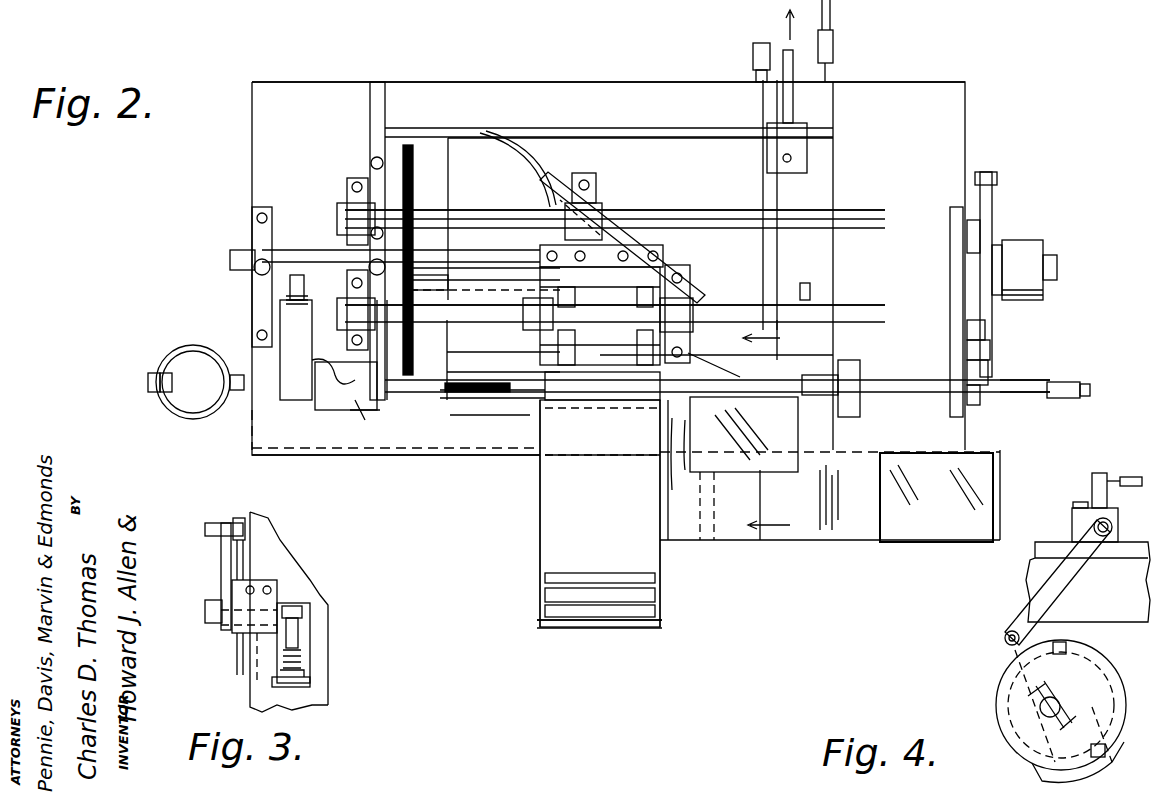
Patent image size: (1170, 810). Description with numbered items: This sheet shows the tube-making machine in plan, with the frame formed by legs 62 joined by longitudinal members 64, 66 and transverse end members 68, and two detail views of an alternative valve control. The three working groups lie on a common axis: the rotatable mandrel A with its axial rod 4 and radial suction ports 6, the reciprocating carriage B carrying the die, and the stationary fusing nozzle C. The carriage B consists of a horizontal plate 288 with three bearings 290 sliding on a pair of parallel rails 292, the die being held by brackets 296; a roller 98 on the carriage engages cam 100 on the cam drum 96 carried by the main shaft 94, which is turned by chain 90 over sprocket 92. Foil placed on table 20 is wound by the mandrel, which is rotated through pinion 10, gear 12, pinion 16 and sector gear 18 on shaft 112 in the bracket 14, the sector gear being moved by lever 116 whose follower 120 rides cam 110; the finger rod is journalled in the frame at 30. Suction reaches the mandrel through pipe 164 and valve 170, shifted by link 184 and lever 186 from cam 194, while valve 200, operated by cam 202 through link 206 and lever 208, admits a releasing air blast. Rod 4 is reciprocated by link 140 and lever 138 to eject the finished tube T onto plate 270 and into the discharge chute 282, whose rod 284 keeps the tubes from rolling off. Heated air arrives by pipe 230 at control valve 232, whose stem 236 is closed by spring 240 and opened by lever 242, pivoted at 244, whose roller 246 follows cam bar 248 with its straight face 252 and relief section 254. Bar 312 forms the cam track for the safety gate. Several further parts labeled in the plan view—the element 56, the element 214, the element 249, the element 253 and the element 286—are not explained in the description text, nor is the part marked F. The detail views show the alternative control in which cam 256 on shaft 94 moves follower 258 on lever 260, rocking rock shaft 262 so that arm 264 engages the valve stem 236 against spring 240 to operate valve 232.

In FIG. 2, the axial rod 4 is at (1035, 395).
In FIG. 2, the radial ports 6 is at (772, 430).
In FIG. 2, the pinion 10 is at (970, 405).
In FIG. 2, the gear 12 is at (988, 370).
In FIG. 2, the plate or bracket 14 is at (950, 345).
In FIG. 2, the pinion 16 is at (990, 350).
In FIG. 2, the sector gear 18 is at (985, 330).
In FIG. 2, the table 20 is at (798, 430).
In FIG. 2, the journal 30 is at (820, 460).
In FIG. 2, the hopper plate 56 is at (595, 400).
In FIG. 2, the legs 62 is at (252, 446).
In FIG. 2, the longitudinal member 64 is at (440, 455).
In FIG. 2, the longitudinal member 66 is at (490, 80).
In FIG. 2, the transverse end members 68 is at (252, 150).
In FIG. 2, the chain 90 is at (420, 150).
In FIG. 2, the second sprocket 92 is at (412, 190).
In FIG. 2, the main shaft 94 is at (1057, 266).
In FIG. 3, the main shaft 94 is at (205, 605).
In FIG. 4, the main shaft 94 is at (1040, 708).
In FIG. 2, the cam drum 96 is at (640, 112).
In FIG. 2, the roller 98 is at (688, 252).
In FIG. 2, the cam 100 is at (512, 143).
In FIG. 2, the cam 110 is at (1045, 292).
In FIG. 2, the shaft 112 is at (990, 232).
In FIG. 2, the lever 116 is at (995, 195).
In FIG. 2, the roller or follower 120 is at (1015, 245).
In FIG. 2, the lever 138 is at (1090, 384).
In FIG. 2, the link 140 is at (1060, 382).
In FIG. 2, the suction pipe 164 is at (783, 12).
In FIG. 2, the valve 170 is at (730, 155).
In FIG. 2, the link 184 is at (756, 76).
In FIG. 2, the lever 186 is at (762, 43).
In FIG. 2, the cam 194 is at (777, 197).
In FIG. 2, the valve 200 is at (835, 8).
In FIG. 2, the short cam 202 is at (818, 283).
In FIG. 2, the link 206 is at (828, 75).
In FIG. 2, the lever 208 is at (830, 45).
In FIG. 2, the bar 214 is at (510, 400).
In FIG. 2, the pipe 230 is at (160, 378).
In FIG. 2, the control valve 232 is at (295, 410).
In FIG. 3, the control valve 232 is at (300, 685).
In FIG. 2, the valve stem 236 is at (290, 285).
In FIG. 3, the valve stem 236 is at (298, 636).
In FIG. 4, the valve stem 236 is at (1130, 477).
In FIG. 2, the spring 240 is at (286, 300).
In FIG. 3, the spring 240 is at (301, 658).
In FIG. 2, the lever 242 is at (258, 247).
In FIG. 2, the pivot 244 is at (230, 265).
In FIG. 2, the cam roller 246 is at (300, 252).
In FIG. 2, the cam bar 248 is at (455, 240).
In FIG. 2, the hopper top bar 249 is at (602, 384).
In FIG. 2, the straight face 252 is at (429, 282).
In FIG. 2, the plate 253 is at (536, 263).
In FIG. 2, the relief section 254 is at (485, 295).
In FIG. 3, the cam 256 is at (245, 560).
In FIG. 4, the cam 256 is at (1098, 672).
In FIG. 3, the follower 258 is at (240, 518).
In FIG. 4, the follower 258 is at (1006, 641).
In FIG. 3, the lever 260 is at (221, 554).
In FIG. 4, the lever 260 is at (1060, 590).
In FIG. 3, the rock shaft 262 is at (240, 686).
In FIG. 4, the rock shaft 262 is at (1112, 520).
In FIG. 3, the arm 264 is at (300, 606).
In FIG. 4, the arm 264 is at (1098, 473).
In FIG. 2, the plate 270 is at (625, 420).
In FIG. 2, the discharge chute 282 is at (540, 530).
In FIG. 2, the rod 284 is at (590, 628).
In FIG. 2, the hopper side 286 is at (655, 502).
In FIG. 2, the horizontal plate 288 is at (196, 382).
In FIG. 2, the bearings 290 is at (595, 162).
In FIG. 2, the horizontal parallel rails 292 is at (752, 210).
In FIG. 2, the brackets 296 is at (640, 350).
In FIG. 2, the bar 312 is at (372, 405).
In FIG. 2, the mandrel A is at (755, 395).
In FIG. 2, the reciprocating carriage B is at (646, 200).
In FIG. 2, the fusing nozzle C is at (465, 400).
In FIG. 2, the frame F is at (735, 472).
In FIG. 2, the tube T is at (598, 605).